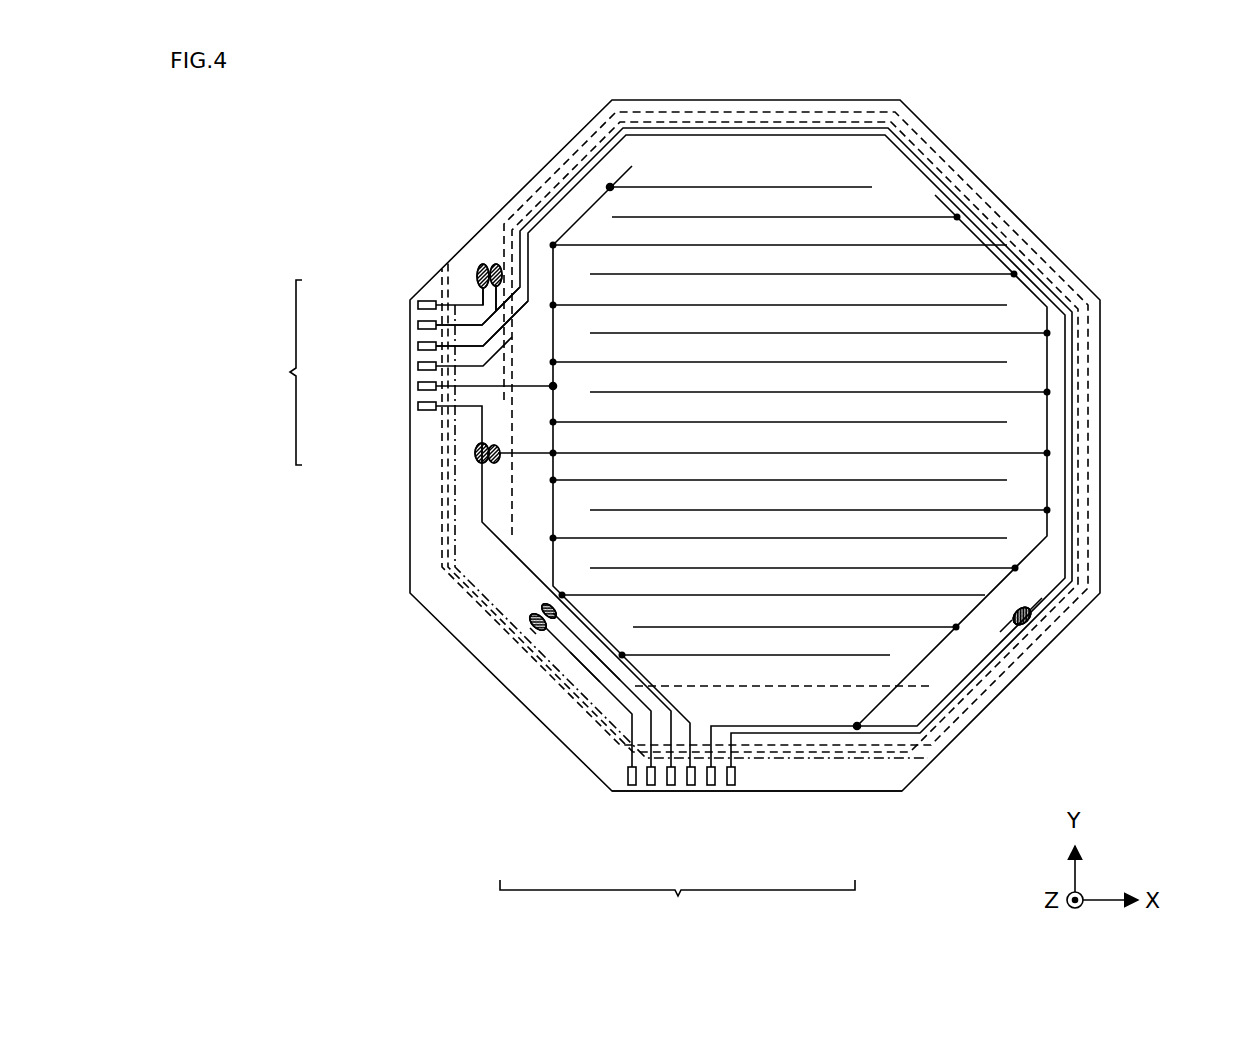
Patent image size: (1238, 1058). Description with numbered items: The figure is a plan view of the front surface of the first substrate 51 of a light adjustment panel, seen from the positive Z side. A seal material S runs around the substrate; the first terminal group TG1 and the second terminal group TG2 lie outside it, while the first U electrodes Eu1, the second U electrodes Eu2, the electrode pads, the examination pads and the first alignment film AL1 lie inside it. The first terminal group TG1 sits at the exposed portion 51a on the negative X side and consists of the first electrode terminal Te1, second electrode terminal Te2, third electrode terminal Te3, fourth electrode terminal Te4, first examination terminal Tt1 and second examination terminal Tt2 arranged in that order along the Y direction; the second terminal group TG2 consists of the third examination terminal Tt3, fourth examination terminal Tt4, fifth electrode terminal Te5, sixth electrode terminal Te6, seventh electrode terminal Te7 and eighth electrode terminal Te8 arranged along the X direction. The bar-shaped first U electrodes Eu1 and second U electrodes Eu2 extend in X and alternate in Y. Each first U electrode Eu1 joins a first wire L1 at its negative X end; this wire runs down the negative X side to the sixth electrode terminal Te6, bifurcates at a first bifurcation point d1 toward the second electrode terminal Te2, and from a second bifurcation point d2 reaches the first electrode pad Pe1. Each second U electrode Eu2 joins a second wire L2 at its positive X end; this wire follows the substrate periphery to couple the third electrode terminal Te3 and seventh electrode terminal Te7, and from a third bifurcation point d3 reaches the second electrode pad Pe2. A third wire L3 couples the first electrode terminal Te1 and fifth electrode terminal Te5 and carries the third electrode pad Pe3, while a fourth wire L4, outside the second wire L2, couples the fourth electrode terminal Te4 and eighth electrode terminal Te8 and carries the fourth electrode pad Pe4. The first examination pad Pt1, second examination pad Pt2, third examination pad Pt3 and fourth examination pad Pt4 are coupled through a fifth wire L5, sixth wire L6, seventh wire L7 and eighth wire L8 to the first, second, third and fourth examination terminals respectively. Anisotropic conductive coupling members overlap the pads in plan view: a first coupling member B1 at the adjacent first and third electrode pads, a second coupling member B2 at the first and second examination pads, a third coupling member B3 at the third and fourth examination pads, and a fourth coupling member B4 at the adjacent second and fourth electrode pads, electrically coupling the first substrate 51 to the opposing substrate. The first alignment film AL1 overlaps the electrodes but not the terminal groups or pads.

The first substrate 51 is at (870, 94).
The exposed portion 51a is at (616, 778).
The seal material S is at (1098, 354).
The first alignment film AL1 is at (1073, 433).
The first wire L1 is at (597, 195).
The second wire L2 is at (1055, 493).
The third wire L3 is at (515, 648).
The fourth wire L4 is at (1060, 573).
The fifth wire L5 is at (493, 302).
The sixth wire L6 is at (478, 290).
The seventh wire L7 is at (568, 692).
The eighth wire L8 is at (592, 705).
The first U electrode Eu1 is at (783, 275).
The second U electrode Eu2 is at (858, 690).
The first terminal group TG1 is at (260, 372).
The second terminal group TG2 is at (677, 914).
The first examination terminal Tt1 is at (418, 325).
The second examination terminal Tt2 is at (418, 305).
The third examination terminal Tt3 is at (632, 790).
The fourth examination terminal Tt4 is at (651, 790).
The first electrode terminal Te1 is at (418, 406).
The second electrode terminal Te2 is at (418, 386).
The third electrode terminal Te3 is at (418, 366).
The fourth electrode terminal Te4 is at (418, 346).
The fifth electrode terminal Te5 is at (671, 790).
The sixth electrode terminal Te6 is at (691, 790).
The seventh electrode terminal Te7 is at (711, 790).
The eighth electrode terminal Te8 is at (731, 790).
The first coupling member B1 is at (472, 464).
The second coupling member B2 is at (499, 263).
The third coupling member B3 is at (526, 648).
The fourth coupling member B4 is at (1034, 617).
The first examination pad Pt1 is at (492, 266).
The second examination pad Pt2 is at (480, 272).
The third examination pad Pt3 is at (535, 630).
The fourth examination pad Pt4 is at (548, 636).
The first electrode pad Pe1 is at (494, 464).
The second electrode pad Pe2 is at (1028, 626).
The third electrode pad Pe3 is at (480, 463).
The fourth electrode pad Pe4 is at (1018, 630).
The first bifurcation point d1 is at (475, 460).
The second bifurcation point d2 is at (525, 614).
The third bifurcation point d3 is at (862, 729).